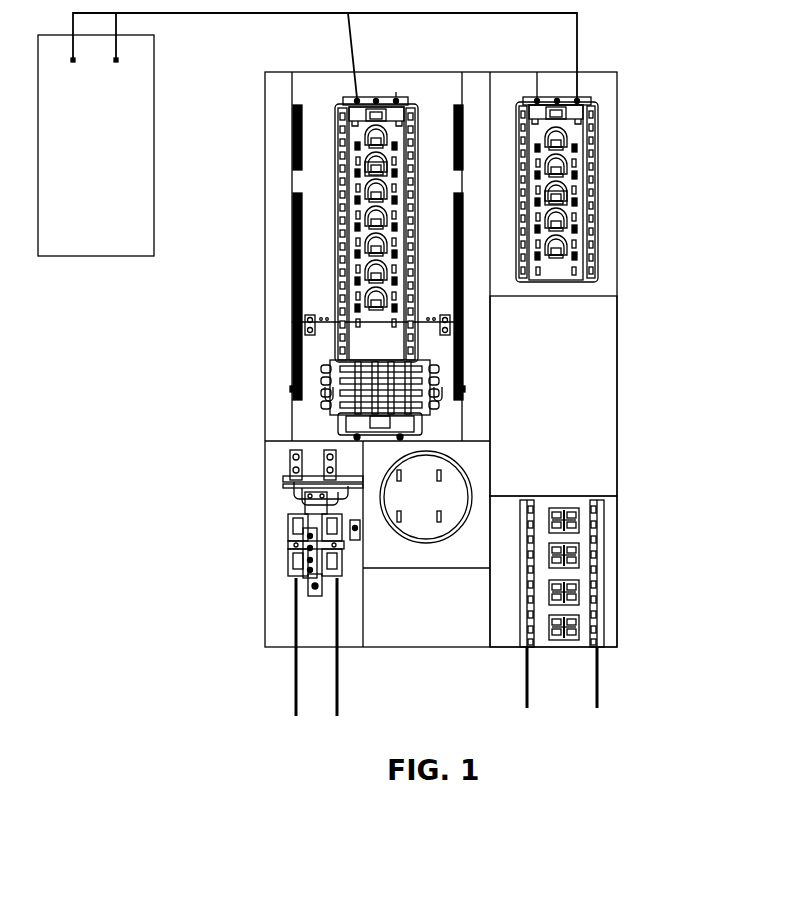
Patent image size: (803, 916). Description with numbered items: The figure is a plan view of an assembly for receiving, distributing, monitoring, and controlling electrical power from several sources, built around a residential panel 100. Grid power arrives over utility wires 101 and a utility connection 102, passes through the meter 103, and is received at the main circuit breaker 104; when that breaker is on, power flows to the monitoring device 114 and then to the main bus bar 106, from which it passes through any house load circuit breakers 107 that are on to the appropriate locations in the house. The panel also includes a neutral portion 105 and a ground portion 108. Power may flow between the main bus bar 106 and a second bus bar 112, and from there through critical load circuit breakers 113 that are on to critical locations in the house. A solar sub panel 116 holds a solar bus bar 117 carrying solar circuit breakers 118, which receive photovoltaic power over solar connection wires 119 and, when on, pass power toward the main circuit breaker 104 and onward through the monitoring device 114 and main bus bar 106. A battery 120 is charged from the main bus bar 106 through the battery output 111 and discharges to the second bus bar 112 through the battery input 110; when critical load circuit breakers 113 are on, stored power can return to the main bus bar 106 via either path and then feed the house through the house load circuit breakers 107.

The residential panel 100 is at (262, 90).
The utility wires 101 is at (337, 680).
The utility connection 102 is at (290, 534).
The meter 103 is at (426, 507).
The main circuit breaker 104 is at (325, 392).
The neutral portion 105 is at (453, 360).
The main bus bar 106 is at (356, 250).
The house load circuit breakers 107 is at (369, 176).
The ground portion 108 is at (297, 152).
The battery input 110 is at (580, 95).
The battery output 111 is at (356, 96).
The second bus bar 112 is at (575, 140).
The critical load circuit breakers 113 is at (563, 200).
The monitoring device 114 is at (553, 396).
The solar sub panel 116 is at (632, 506).
The solar bus bar 117 is at (580, 537).
The solar circuit breakers 118 is at (570, 592).
The solar connection wires 119 is at (527, 667).
The battery 120 is at (307, 134).